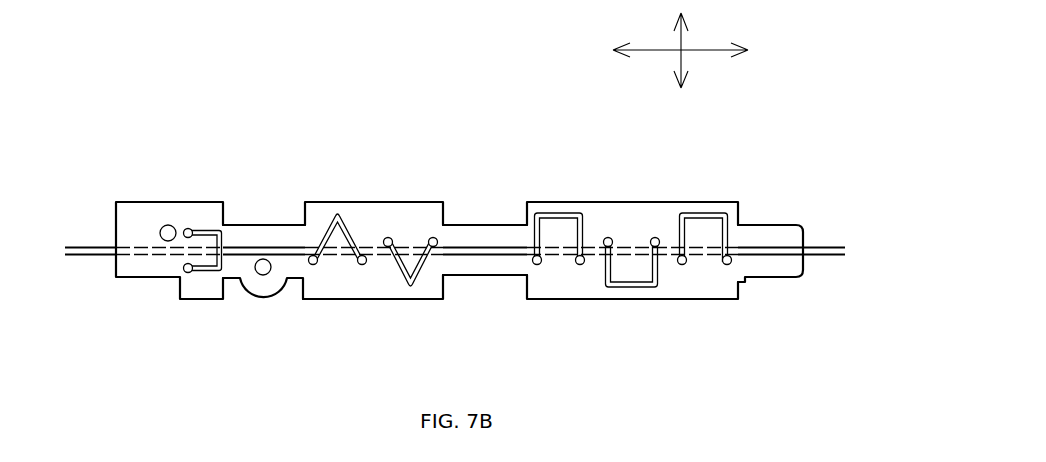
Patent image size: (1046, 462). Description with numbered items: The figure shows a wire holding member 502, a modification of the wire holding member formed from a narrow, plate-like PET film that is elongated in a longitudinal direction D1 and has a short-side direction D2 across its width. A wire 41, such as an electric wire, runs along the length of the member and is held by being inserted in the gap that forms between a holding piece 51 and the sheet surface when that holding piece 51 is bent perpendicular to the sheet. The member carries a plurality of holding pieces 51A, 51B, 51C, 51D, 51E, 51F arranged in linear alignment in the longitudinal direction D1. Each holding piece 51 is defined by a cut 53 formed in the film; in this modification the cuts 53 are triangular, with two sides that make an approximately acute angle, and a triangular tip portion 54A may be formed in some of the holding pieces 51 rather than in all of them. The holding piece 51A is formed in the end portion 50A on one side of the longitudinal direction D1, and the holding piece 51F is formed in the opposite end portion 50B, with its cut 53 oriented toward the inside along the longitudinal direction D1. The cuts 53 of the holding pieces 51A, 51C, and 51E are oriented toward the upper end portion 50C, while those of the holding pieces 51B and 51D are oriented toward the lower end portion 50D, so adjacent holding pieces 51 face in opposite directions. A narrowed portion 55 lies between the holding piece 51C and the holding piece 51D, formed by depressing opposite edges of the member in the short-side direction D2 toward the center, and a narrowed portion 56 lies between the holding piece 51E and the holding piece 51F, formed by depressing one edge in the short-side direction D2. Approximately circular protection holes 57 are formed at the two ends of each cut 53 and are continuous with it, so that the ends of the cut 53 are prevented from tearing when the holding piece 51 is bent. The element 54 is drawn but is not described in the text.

The wire holding member 502 is at (157, 104).
The wire 41 is at (92, 244).
The end portion 50A is at (743, 238).
The end portion 50B is at (158, 280).
The upper end portion 50C is at (666, 201).
The lower end portion 50D is at (537, 302).
The holding piece 51 is at (463, 208).
The holding piece 51A is at (717, 222).
The holding piece 51B is at (620, 266).
The holding piece 51C is at (542, 228).
The holding piece 51D is at (406, 265).
The holding piece 51E is at (330, 217).
The holding piece 51F is at (212, 240).
The cut 53 is at (339, 212).
The extending portion 54 is at (553, 228).
The tip portion 54A is at (336, 226).
The narrowed portion 55 is at (460, 199).
The narrowed portion 56 is at (245, 200).
The protection hole 57 is at (186, 230).
The longitudinal direction D1 is at (711, 47).
The short-side direction D2 is at (680, 42).